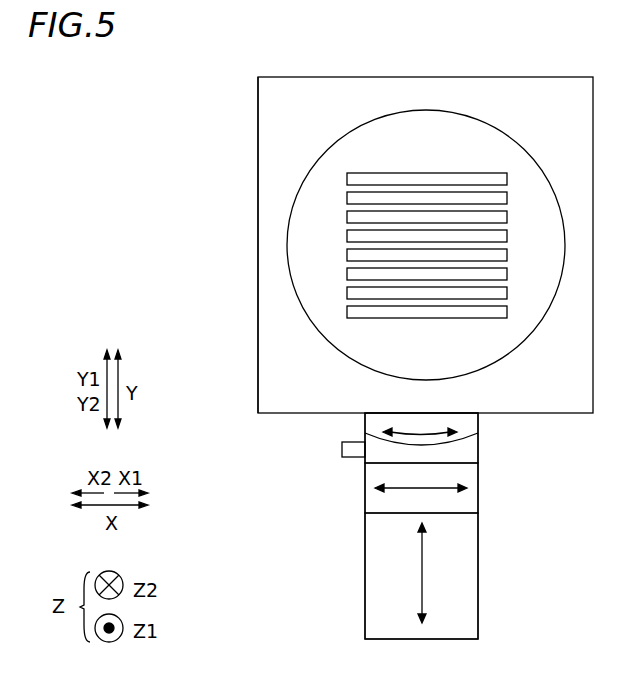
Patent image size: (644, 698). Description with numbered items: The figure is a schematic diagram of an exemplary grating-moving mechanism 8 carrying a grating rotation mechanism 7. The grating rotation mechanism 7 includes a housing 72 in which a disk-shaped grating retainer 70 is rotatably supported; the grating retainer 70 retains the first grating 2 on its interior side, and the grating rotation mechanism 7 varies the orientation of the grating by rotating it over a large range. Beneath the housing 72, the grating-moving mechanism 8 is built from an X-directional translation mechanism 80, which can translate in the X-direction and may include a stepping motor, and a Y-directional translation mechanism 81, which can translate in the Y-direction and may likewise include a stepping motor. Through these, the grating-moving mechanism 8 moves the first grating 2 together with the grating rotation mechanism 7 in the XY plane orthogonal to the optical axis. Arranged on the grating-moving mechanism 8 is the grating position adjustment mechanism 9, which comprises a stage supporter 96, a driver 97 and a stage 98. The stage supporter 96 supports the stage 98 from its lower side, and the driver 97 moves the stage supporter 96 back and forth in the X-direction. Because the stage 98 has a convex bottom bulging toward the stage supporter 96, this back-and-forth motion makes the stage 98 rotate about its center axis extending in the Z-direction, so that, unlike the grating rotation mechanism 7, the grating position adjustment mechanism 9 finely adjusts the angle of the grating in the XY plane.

The grating rotation mechanism 7 is at (238, 183).
The housing 72 is at (258, 333).
The grating retainer 70 is at (318, 159).
The first grating 2 is at (330, 229).
The grating-moving mechanism 8 is at (322, 547).
The grating position adjustment mechanism 9 is at (268, 440).
The driver 97 is at (342, 448).
The stage supporter 96 is at (478, 448).
The stage 98 is at (478, 428).
The X-directional translation mechanism 80 is at (478, 491).
The Y-directional translation mechanism 81 is at (478, 572).